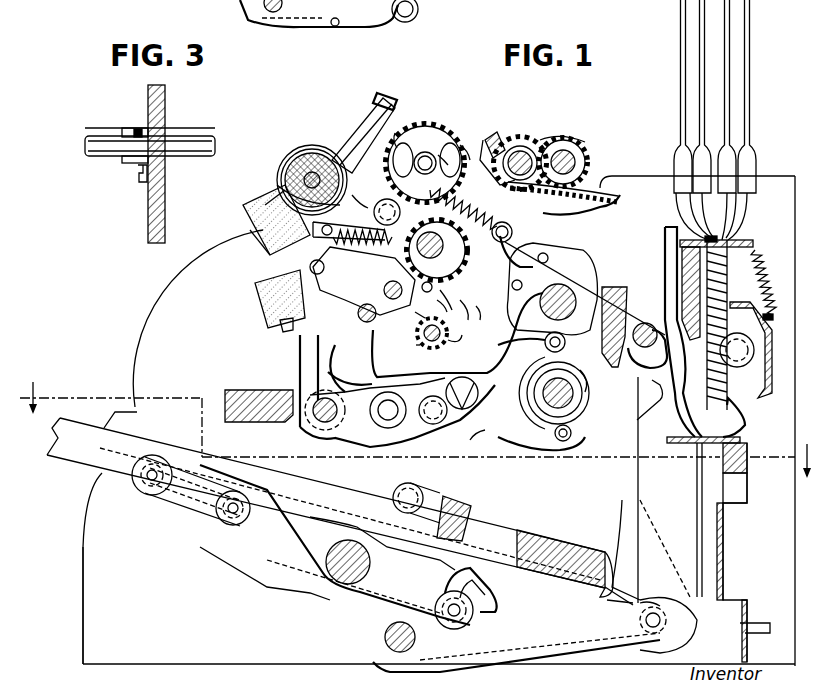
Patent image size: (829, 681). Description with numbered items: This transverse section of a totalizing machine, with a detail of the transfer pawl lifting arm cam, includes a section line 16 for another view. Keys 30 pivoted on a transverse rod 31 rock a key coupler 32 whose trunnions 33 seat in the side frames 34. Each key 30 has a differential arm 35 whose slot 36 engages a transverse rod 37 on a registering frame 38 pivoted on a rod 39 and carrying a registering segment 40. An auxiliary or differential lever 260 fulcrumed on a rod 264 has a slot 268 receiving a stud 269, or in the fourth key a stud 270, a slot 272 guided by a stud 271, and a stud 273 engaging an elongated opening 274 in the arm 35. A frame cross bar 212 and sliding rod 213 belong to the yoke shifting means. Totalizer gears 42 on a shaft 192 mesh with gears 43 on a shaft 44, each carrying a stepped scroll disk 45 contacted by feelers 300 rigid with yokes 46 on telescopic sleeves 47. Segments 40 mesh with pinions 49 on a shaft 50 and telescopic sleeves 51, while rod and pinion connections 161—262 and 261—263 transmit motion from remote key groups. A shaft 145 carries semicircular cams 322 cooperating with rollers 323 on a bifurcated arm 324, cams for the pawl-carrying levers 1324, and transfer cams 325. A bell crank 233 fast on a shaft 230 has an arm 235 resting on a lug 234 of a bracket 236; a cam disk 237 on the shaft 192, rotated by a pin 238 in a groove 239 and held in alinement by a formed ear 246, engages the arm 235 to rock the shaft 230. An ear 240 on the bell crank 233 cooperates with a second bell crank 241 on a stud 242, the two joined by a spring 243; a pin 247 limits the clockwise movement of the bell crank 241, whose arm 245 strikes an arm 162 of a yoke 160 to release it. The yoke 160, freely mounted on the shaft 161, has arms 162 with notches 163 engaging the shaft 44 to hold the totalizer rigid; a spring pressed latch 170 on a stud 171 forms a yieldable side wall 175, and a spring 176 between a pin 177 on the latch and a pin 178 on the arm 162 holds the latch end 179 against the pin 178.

In FIG. 1, the section line 16- 16 is at (422, 420).
In FIG. 1, the keys 30 is at (77, 463).
In FIG. 1, the transverse rod 31 is at (363, 567).
In FIG. 1, the key coupler 32 is at (510, 528).
In FIG. 1, the trunnions 33 is at (400, 498).
In FIG. 1, the side frames 34 is at (103, 597).
In FIG. 1, the differential arm 35 is at (660, 477).
In FIG. 1, the slot 36 is at (656, 378).
In FIG. 1, the transverse rod 37 is at (647, 330).
In FIG. 1, the registering frame 38 is at (632, 310).
In FIG. 1, the rod 39 is at (541, 272).
In FIG. 1, the registering segment 40 is at (603, 206).
In FIG. 1, the gears 42 is at (437, 246).
In FIG. 1, the gears 43 is at (441, 157).
In FIG. 1, the shaft 44 is at (426, 160).
In FIG. 1, the stepped scroll disk 45 is at (397, 132).
In FIG. 1, the yokes 46 is at (257, 230).
In FIG. 1, the telescopic sleeves 47 is at (303, 163).
In FIG. 1, the pinion 49 is at (452, 343).
In FIG. 1, the shaft 50 is at (431, 338).
In FIG. 1, the telescopic sleeves 51 is at (420, 345).
In FIG. 1, the shaft 145 is at (577, 398).
In FIG. 1, the yoke 160 is at (527, 150).
In FIG. 1, the shaft 161 is at (530, 137).
In FIG. 1, the arm 162 is at (474, 210).
In FIG. 1, the notches 163 is at (396, 157).
In FIG. 1, the spring pressed latch 170 is at (498, 204).
In FIG. 1, the stud 171 is at (483, 140).
In FIG. 1, the yieldable side wall 175 is at (465, 148).
In FIG. 1, the spring 176 is at (487, 246).
In FIG. 1, the pin 177 is at (517, 241).
In FIG. 1, the pin 178 is at (381, 131).
In FIG. 1, the end 179 is at (357, 200).
In FIG. 3, the shaft 192 is at (182, 143).
In FIG. 1, the shaft 192 is at (467, 302).
In FIG. 1, the cross bar 212 is at (235, 390).
In FIG. 1, the sliding rod 213 is at (322, 416).
In FIG. 1, the shaft 230 is at (284, 265).
In FIG. 1, the bell crank 233 is at (257, 229).
In FIG. 1, the lug 234 is at (420, 315).
In FIG. 1, the arm 235 is at (445, 295).
In FIG. 1, the bracket 236 is at (305, 325).
In FIG. 3, the cam disk 237 is at (142, 128).
In FIG. 1, the cam disk 237 is at (481, 310).
In FIG. 3, the pin 238 is at (134, 130).
In FIG. 3, the groove 239 is at (120, 137).
In FIG. 1, the ear 240 is at (272, 212).
In FIG. 1, the second bell crank 241 is at (323, 248).
In FIG. 1, the stud 242 is at (387, 210).
In FIG. 1, the spring 243 is at (323, 288).
In FIG. 1, the arm 245 is at (374, 146).
In FIG. 3, the formed ear 246 is at (140, 175).
In FIG. 1, the formed ear 246 is at (441, 306).
In FIG. 1, the pin 247 is at (335, 200).
In FIG. 1, the auxiliary or differential lever 260 is at (328, 623).
In FIG. 1, the rod 261 is at (574, 162).
In FIG. 1, the pinion 262 is at (562, 137).
In FIG. 1, the pinion 263 is at (583, 148).
In FIG. 1, the rod 264 is at (415, 645).
In FIG. 1, the slot 268 is at (198, 503).
In FIG. 1, the stud 269 is at (230, 512).
In FIG. 1, the stud 270 is at (148, 482).
In FIG. 1, the stud 271 is at (457, 617).
In FIG. 1, the slot 272 is at (480, 592).
In FIG. 1, the stud 273 is at (683, 588).
In FIG. 1, the elongated opening 274 is at (638, 634).
In FIG. 1, the feelers 300 is at (395, 100).
In FIG. 1, the semicircular cams 322 is at (556, 348).
In FIG. 1, the rollers 323 is at (542, 343).
In FIG. 1, the arm 324 is at (470, 440).
In FIG. 1, the transfer cams 325 is at (586, 377).
In FIG. 1, the levers 1324 is at (313, 360).